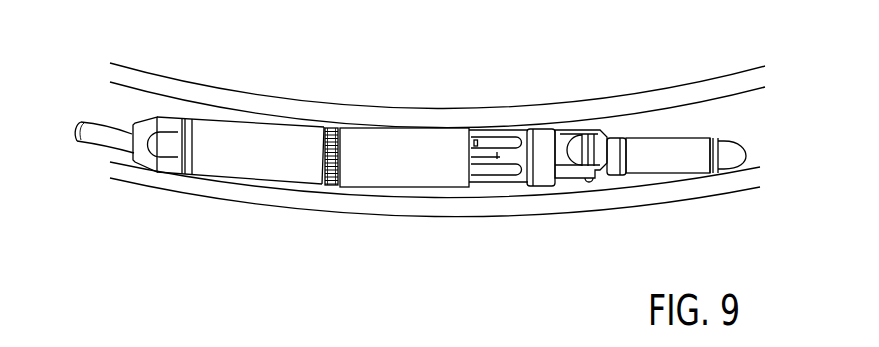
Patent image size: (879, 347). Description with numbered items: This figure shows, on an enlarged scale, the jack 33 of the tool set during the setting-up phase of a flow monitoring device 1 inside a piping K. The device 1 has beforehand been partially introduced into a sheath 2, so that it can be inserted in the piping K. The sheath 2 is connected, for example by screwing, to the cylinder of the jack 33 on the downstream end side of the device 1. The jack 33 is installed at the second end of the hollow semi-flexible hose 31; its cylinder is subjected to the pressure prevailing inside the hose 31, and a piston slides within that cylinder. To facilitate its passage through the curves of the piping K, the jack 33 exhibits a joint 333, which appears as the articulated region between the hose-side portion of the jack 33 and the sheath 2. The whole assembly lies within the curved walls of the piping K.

The flow monitoring device 1 is at (631, 127).
The sheath 2 is at (418, 133).
The hollow semi-flexible hose 31 is at (98, 113).
The jack 33 is at (246, 188).
The joint 333 is at (322, 187).
The piping K is at (190, 93).